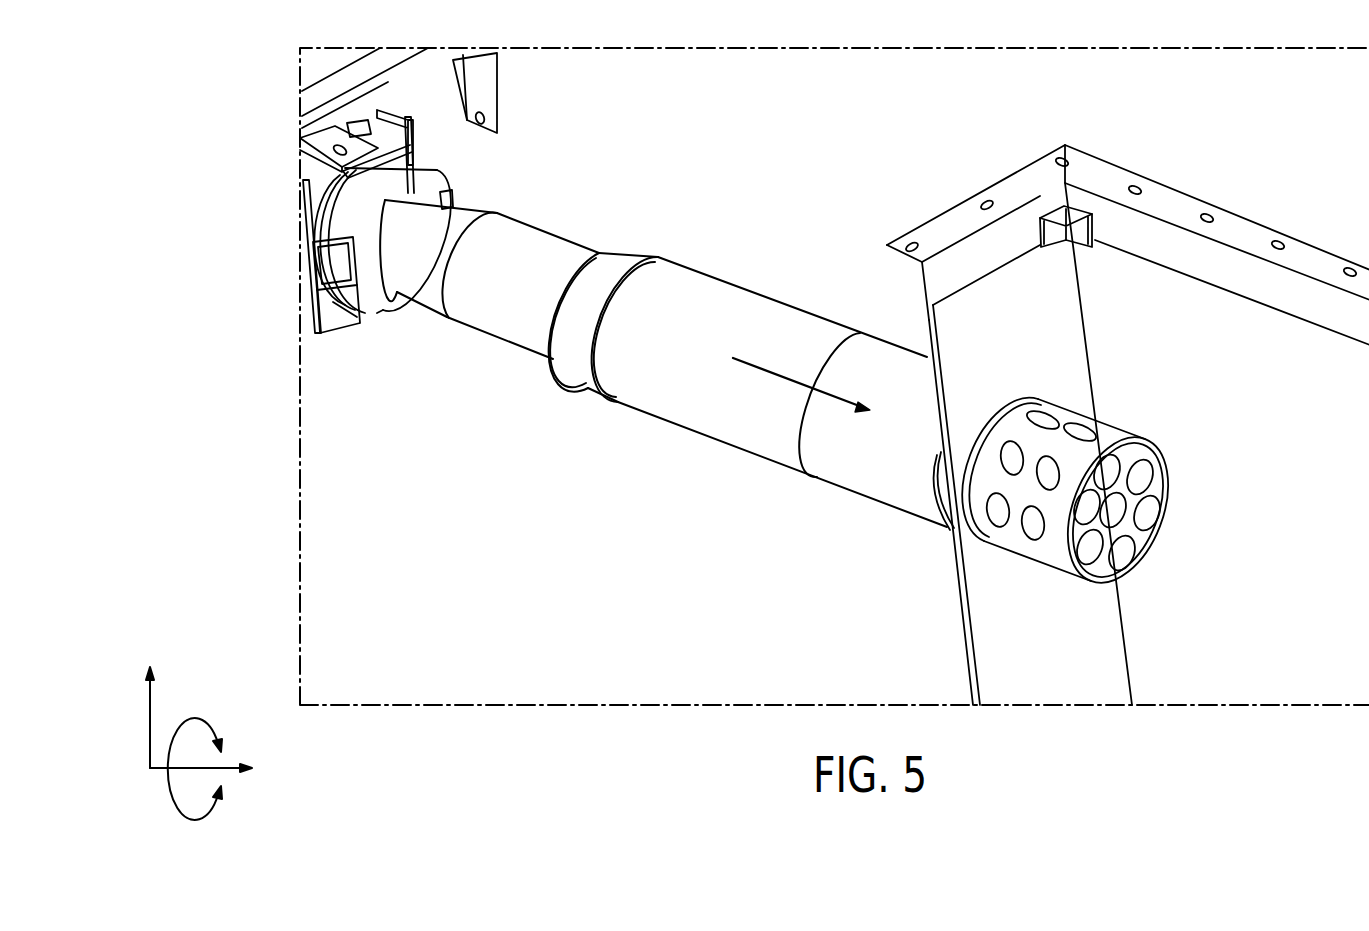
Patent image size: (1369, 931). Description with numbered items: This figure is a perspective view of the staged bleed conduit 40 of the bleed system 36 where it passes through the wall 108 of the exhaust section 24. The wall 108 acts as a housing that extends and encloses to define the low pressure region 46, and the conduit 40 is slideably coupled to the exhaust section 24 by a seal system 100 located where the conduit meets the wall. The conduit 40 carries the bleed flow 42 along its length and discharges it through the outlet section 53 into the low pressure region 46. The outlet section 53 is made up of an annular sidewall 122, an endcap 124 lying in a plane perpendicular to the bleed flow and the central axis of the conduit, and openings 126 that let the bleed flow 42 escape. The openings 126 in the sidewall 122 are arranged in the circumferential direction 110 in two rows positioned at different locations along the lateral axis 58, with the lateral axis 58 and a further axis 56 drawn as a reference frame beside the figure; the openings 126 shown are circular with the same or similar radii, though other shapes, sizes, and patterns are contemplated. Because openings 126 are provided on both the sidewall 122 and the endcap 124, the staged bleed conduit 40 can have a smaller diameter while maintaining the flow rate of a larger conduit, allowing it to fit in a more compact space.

The bleed system 36 is at (710, 126).
The staged bleed conduit 40 is at (733, 282).
The bleed flow 42 is at (765, 372).
The outlet section 53 is at (1106, 486).
The seal system 100 is at (937, 500).
The wall 108 is at (958, 222).
The sidewall 122 is at (1112, 432).
The endcap 124 is at (1143, 543).
The openings 126 is at (1145, 508).
The exhaust section 24 is at (1141, 444).
The low pressure region 46 is at (1353, 552).
The axis 56 is at (150, 722).
The lateral axis 58 is at (152, 772).
The circumferential direction 110 is at (197, 720).